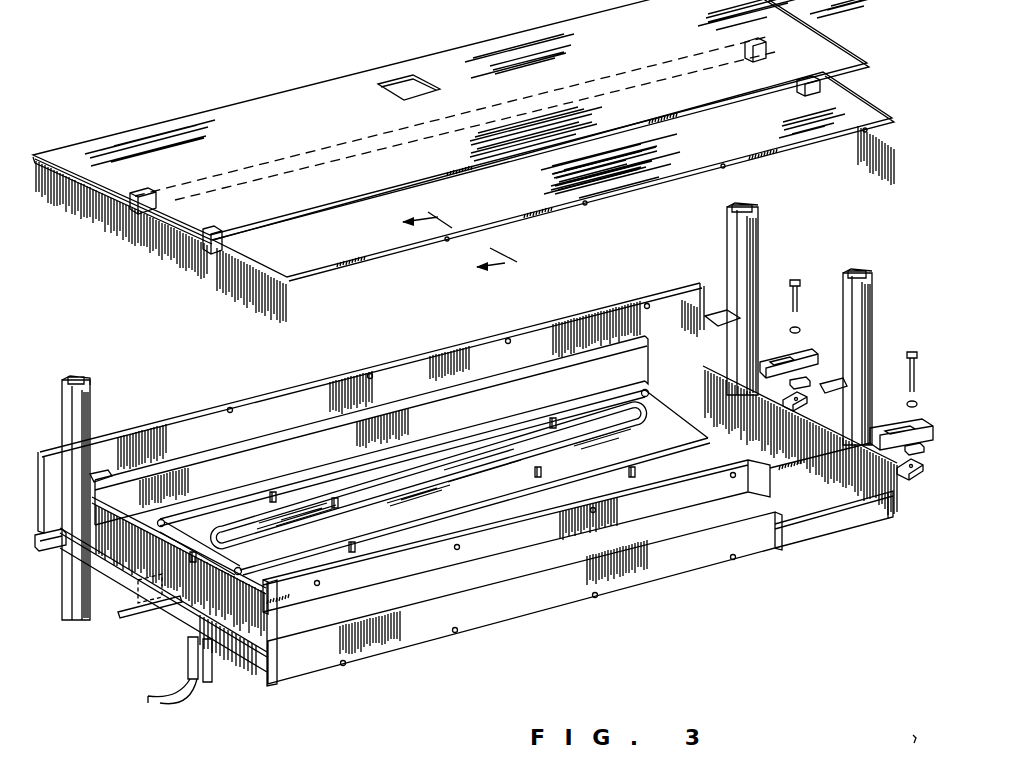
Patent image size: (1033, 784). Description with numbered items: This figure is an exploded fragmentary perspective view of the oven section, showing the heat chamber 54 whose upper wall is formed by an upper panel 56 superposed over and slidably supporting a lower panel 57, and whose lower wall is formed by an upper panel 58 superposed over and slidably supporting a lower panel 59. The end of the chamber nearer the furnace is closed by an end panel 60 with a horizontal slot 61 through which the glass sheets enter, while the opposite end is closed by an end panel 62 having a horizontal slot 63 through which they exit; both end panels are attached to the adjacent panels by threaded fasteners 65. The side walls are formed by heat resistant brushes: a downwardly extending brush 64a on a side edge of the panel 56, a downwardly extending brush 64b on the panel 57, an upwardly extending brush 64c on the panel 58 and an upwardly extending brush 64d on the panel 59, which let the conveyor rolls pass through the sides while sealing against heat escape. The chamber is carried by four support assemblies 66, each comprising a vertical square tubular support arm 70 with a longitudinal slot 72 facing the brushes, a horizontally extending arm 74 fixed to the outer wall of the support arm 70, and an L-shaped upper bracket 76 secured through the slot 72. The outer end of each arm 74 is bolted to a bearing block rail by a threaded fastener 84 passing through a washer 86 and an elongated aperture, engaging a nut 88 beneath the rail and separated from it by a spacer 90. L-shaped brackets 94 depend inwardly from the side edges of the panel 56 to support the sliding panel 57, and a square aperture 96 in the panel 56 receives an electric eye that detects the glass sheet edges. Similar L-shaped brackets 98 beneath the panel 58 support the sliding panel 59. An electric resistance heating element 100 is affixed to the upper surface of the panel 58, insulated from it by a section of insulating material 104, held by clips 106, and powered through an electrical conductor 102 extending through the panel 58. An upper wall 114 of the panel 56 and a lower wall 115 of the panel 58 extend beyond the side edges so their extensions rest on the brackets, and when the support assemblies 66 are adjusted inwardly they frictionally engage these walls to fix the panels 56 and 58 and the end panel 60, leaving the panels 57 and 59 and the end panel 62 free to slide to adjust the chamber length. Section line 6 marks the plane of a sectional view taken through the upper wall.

The heat chamber 54 is at (288, 46).
The upper panel 56 is at (234, 100).
The lower panel 57 is at (752, 140).
The upper panel 58 is at (654, 379).
The lower panel 59 is at (796, 553).
The end panel 60 is at (270, 405).
The slot 61 is at (450, 390).
The end panel 62 is at (420, 640).
The slot 63 is at (493, 583).
The brush 64a is at (82, 205).
The brush 64b is at (245, 290).
The brush 64c is at (123, 590).
The brush 64d is at (247, 642).
The threaded fasteners 65 is at (230, 408).
The support assemblies 66 is at (50, 398).
The support arm 70 is at (63, 420).
The slot 72 is at (735, 225).
The horizontally extending arm 74 is at (55, 550).
The upper bracket 76 is at (102, 474).
The threaded fastener 84 is at (795, 278).
The washer 86 is at (790, 332).
The nut 88 is at (796, 410).
The spacer 90 is at (805, 378).
The L-shaped brackets 94 is at (200, 198).
The square aperture 96 is at (398, 80).
The L-shaped brackets 98 is at (140, 618).
The electric resistance heating element 100 is at (302, 484).
The electrical conductor 102 is at (178, 692).
The section of insulating material 104 is at (417, 470).
The clips 106 is at (556, 420).
The upper wall 114 is at (80, 165).
The lower wall 115 is at (115, 615).
The section line 6 is at (468, 230).